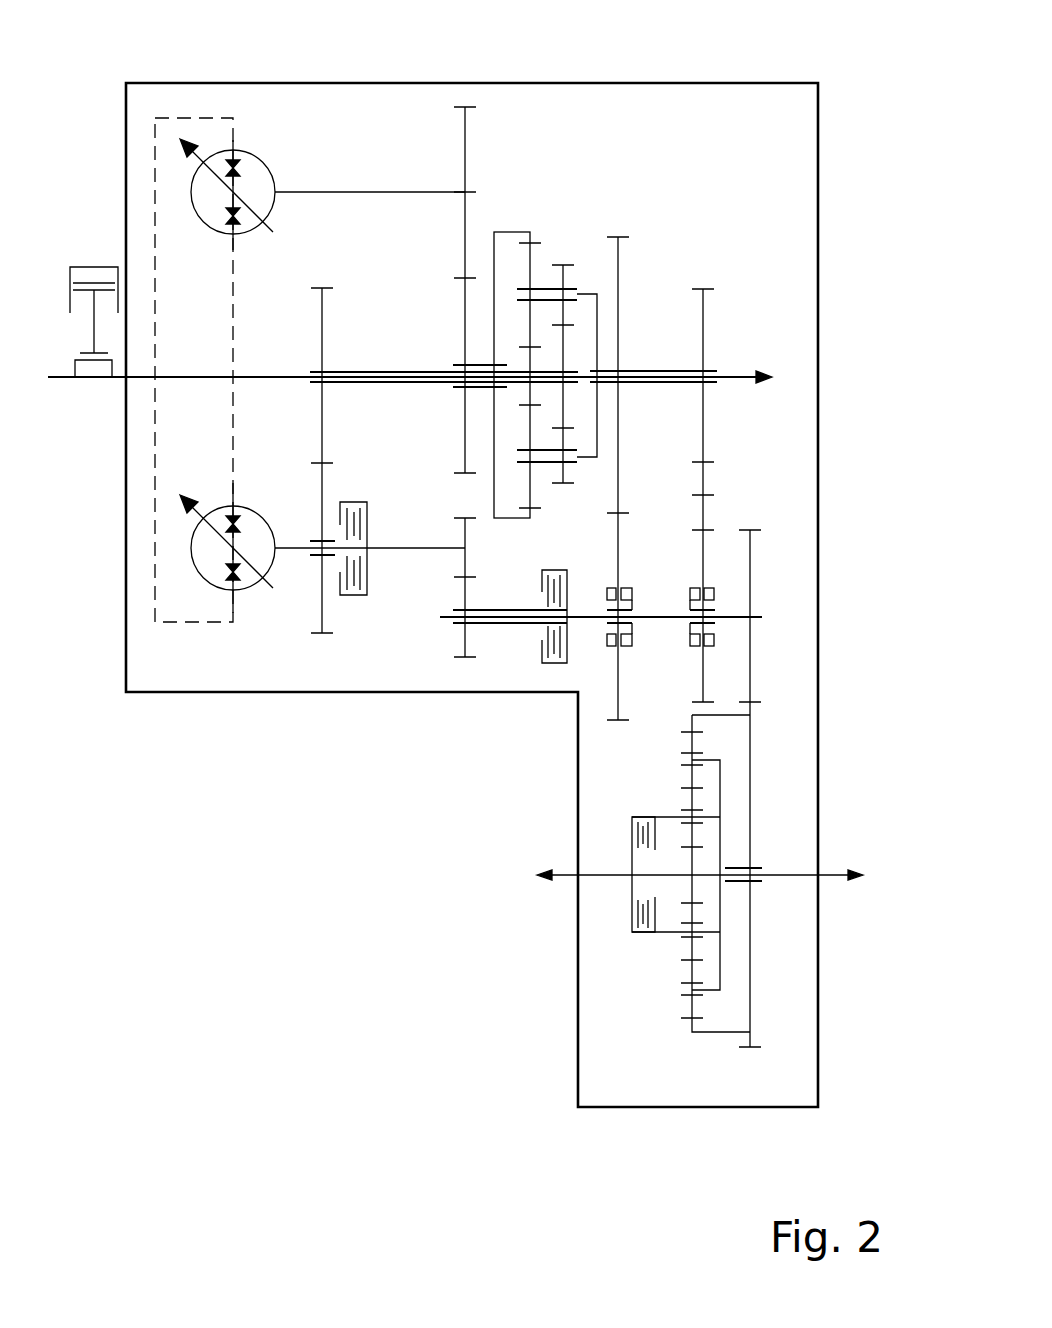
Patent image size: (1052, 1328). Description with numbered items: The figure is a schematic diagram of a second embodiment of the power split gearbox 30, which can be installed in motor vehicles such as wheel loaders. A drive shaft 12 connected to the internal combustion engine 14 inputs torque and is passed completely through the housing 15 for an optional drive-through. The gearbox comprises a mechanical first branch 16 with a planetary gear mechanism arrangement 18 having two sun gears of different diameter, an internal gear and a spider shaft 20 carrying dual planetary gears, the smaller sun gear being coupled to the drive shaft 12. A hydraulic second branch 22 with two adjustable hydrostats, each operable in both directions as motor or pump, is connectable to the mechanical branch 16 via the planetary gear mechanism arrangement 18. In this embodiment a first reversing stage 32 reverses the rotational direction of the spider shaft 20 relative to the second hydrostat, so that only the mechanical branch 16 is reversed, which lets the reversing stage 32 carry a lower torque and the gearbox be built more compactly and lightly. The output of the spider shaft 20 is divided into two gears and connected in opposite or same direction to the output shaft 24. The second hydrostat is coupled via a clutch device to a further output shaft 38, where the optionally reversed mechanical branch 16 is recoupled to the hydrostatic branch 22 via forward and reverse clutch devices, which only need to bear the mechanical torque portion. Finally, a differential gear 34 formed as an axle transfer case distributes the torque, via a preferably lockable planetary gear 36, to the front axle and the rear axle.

The drive shaft 12 is at (195, 377).
The internal combustion engine 14 is at (88, 250).
The housing 15 is at (160, 694).
The mechanical first branch 16 is at (525, 113).
The planetary gear mechanism arrangement 18 is at (570, 168).
The spider shaft 20 is at (598, 333).
The hydraulic second branch 22 is at (225, 93).
The output shaft 24 is at (597, 875).
The power split gearbox 30 is at (823, 77).
The first reversing stage 32 is at (675, 170).
The differential gear 34 is at (618, 987).
The lockable planetary gear 36 is at (712, 1077).
The output shaft 38 is at (588, 617).